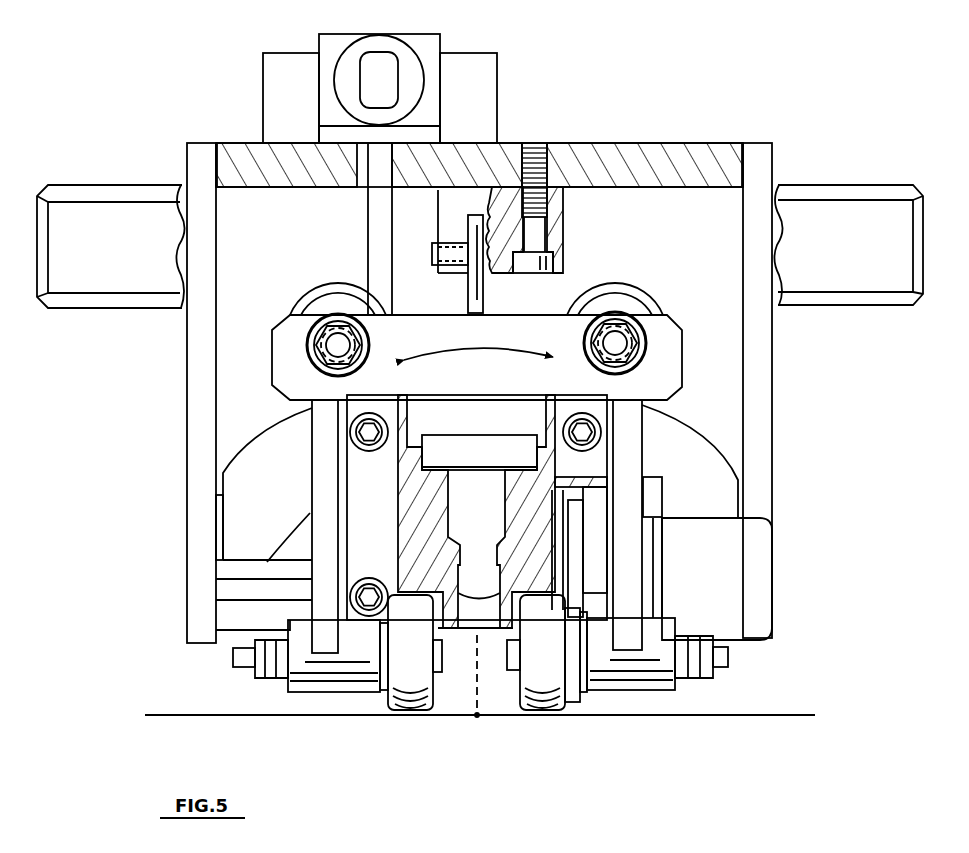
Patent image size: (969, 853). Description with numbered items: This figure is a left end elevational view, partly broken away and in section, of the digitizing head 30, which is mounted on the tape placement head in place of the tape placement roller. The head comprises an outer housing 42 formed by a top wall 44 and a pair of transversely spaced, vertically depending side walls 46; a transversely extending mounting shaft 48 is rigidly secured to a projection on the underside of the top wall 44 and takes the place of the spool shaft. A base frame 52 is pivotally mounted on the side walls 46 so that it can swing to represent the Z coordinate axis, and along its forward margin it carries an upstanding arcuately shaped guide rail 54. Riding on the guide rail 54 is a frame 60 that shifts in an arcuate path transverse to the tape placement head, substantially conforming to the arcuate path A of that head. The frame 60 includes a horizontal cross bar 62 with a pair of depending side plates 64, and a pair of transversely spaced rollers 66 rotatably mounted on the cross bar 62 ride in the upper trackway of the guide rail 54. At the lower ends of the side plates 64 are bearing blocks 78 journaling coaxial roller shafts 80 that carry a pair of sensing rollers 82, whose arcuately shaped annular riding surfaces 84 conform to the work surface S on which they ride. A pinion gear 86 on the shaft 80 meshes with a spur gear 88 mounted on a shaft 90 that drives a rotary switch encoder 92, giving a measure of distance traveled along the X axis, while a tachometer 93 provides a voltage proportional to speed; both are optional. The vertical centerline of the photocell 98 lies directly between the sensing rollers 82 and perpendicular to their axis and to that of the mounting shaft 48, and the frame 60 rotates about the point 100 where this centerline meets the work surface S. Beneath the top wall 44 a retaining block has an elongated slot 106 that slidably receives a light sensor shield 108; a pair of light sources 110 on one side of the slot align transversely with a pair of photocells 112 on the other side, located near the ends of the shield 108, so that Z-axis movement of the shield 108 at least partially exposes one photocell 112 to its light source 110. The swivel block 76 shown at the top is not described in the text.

The digitizing head 30 is at (588, 122).
The outer housing 42 is at (781, 372).
The top wall 44 is at (675, 158).
The side walls 46 is at (197, 530).
The mounting shaft 48 is at (835, 185).
The base frame 52 is at (225, 613).
The guide rail 54 is at (690, 435).
The frame 60 is at (418, 300).
The cross bar 62 is at (560, 320).
The side plates 64 is at (327, 470).
The rollers 66 is at (322, 290).
The swivel block with eye 76 is at (412, 80).
The bearing blocks 78 is at (323, 677).
The roller shafts 80 is at (440, 658).
The sensing rollers 82 is at (408, 712).
The annular riding surfaces 84 is at (390, 675).
The pinion gear 86 is at (584, 690).
The spur gear 88 is at (575, 578).
The shaft 90 is at (566, 555).
The rotary switch encoder 92 is at (760, 570).
The tachometer 93 is at (650, 497).
The photocell 98 is at (470, 447).
The point 100 is at (478, 716).
The elongated slot 106 is at (470, 272).
The light sensor shield 108 is at (485, 282).
The light sources 110 is at (465, 248).
The photocells 112 is at (487, 222).
The arcuate path A is at (476, 346).
The work surface S is at (762, 714).